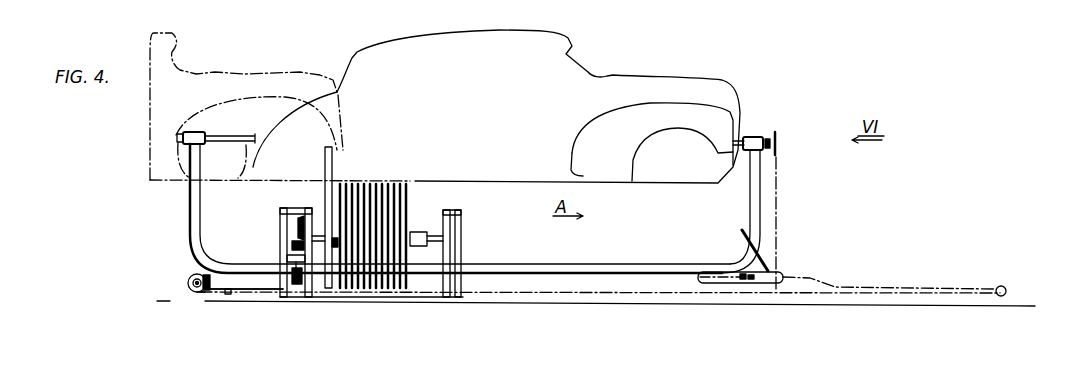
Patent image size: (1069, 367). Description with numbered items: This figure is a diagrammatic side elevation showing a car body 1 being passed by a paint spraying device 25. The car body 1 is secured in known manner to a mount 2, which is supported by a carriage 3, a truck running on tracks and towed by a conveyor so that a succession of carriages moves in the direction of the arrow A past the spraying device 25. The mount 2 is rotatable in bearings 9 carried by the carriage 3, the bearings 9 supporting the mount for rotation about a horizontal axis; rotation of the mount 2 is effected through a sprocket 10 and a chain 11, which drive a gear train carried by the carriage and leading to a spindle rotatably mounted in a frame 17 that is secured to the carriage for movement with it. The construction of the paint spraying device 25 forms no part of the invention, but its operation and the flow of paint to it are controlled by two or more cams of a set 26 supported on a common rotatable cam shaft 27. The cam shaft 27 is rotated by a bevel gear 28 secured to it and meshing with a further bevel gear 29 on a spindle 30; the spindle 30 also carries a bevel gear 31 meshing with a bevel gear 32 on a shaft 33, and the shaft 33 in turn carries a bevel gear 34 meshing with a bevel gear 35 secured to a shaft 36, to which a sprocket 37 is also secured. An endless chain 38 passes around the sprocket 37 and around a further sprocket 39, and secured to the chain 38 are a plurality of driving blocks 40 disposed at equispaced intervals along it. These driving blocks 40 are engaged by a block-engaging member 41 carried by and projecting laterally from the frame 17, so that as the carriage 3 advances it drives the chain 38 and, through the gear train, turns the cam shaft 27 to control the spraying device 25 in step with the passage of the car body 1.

The car body 1 is at (573, 66).
The mount 2 is at (232, 137).
The carriage 3 is at (576, 263).
The bearings 9 is at (197, 132).
The sprocket 10 is at (779, 143).
The chain 11 is at (777, 189).
The frame 17 is at (773, 284).
The paint spraying device 25 is at (333, 160).
The set of cams 26 is at (392, 176).
The cam shaft 27 is at (438, 233).
The bevel gear 28 is at (300, 228).
The bevel gear 29 is at (297, 246).
The spindle 30 is at (300, 279).
The bevel gear 31 is at (298, 268).
The bevel gear 32 is at (291, 281).
The shaft 33 is at (250, 289).
The bevel gear 34 is at (201, 292).
The bevel gear 35 is at (191, 291).
The shaft 36 is at (189, 283).
The sprocket 37 is at (192, 276).
The endless chain 38 is at (648, 268).
The sprocket 39 is at (1005, 289).
The driving blocks 40 is at (228, 295).
The block-engaging member 41 is at (740, 283).